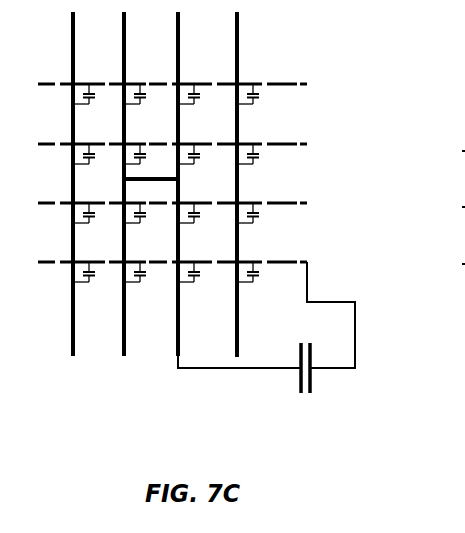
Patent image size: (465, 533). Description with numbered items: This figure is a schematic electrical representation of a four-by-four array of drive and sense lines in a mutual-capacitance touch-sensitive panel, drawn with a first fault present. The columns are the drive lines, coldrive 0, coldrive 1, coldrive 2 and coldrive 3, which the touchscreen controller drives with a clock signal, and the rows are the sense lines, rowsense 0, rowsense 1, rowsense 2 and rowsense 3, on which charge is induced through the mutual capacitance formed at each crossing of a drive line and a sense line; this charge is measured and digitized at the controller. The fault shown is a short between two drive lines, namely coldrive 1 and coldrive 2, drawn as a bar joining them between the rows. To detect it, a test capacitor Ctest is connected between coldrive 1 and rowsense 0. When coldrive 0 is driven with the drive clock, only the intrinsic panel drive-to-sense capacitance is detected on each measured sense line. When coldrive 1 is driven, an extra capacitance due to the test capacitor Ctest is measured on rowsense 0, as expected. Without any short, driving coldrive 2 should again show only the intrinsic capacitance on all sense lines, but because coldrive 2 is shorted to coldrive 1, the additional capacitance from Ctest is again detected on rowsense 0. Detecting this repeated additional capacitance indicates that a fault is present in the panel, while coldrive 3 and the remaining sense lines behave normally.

The test capacitor Ctest is at (352, 408).
The fourth sense line rowsense 3 is at (224, 83).
The third sense line rowsense 2 is at (224, 145).
The second sense line rowsense 1 is at (224, 203).
The first sense line rowsense 0 is at (224, 263).
The fourth drive line coldrive 3 is at (72, 231).
The third drive line coldrive 2 is at (123, 231).
The second drive line coldrive 1 is at (179, 231).
The first drive line coldrive 0 is at (238, 231).